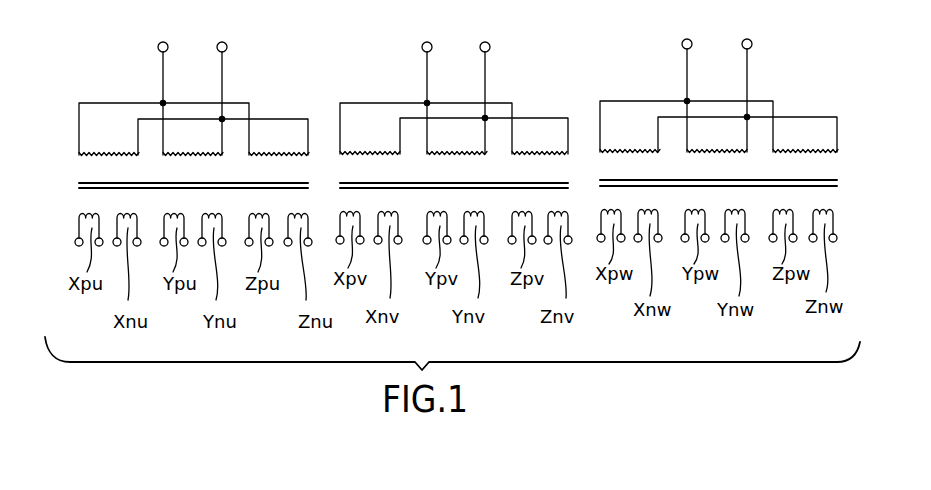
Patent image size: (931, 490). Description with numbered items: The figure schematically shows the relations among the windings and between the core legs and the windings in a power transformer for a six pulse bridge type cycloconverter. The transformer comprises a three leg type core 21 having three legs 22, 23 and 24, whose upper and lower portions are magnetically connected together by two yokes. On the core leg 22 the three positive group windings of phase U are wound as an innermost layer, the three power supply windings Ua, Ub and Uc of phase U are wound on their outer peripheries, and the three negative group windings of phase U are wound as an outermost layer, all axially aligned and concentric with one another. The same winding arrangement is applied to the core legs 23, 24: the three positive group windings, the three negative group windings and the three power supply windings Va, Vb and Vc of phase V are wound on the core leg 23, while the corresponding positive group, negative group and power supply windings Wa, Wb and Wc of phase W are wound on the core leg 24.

The three leg type core 21 is at (458, 113).
The core leg 22 is at (250, 182).
The core leg 23 is at (460, 180).
The core leg 24 is at (673, 177).